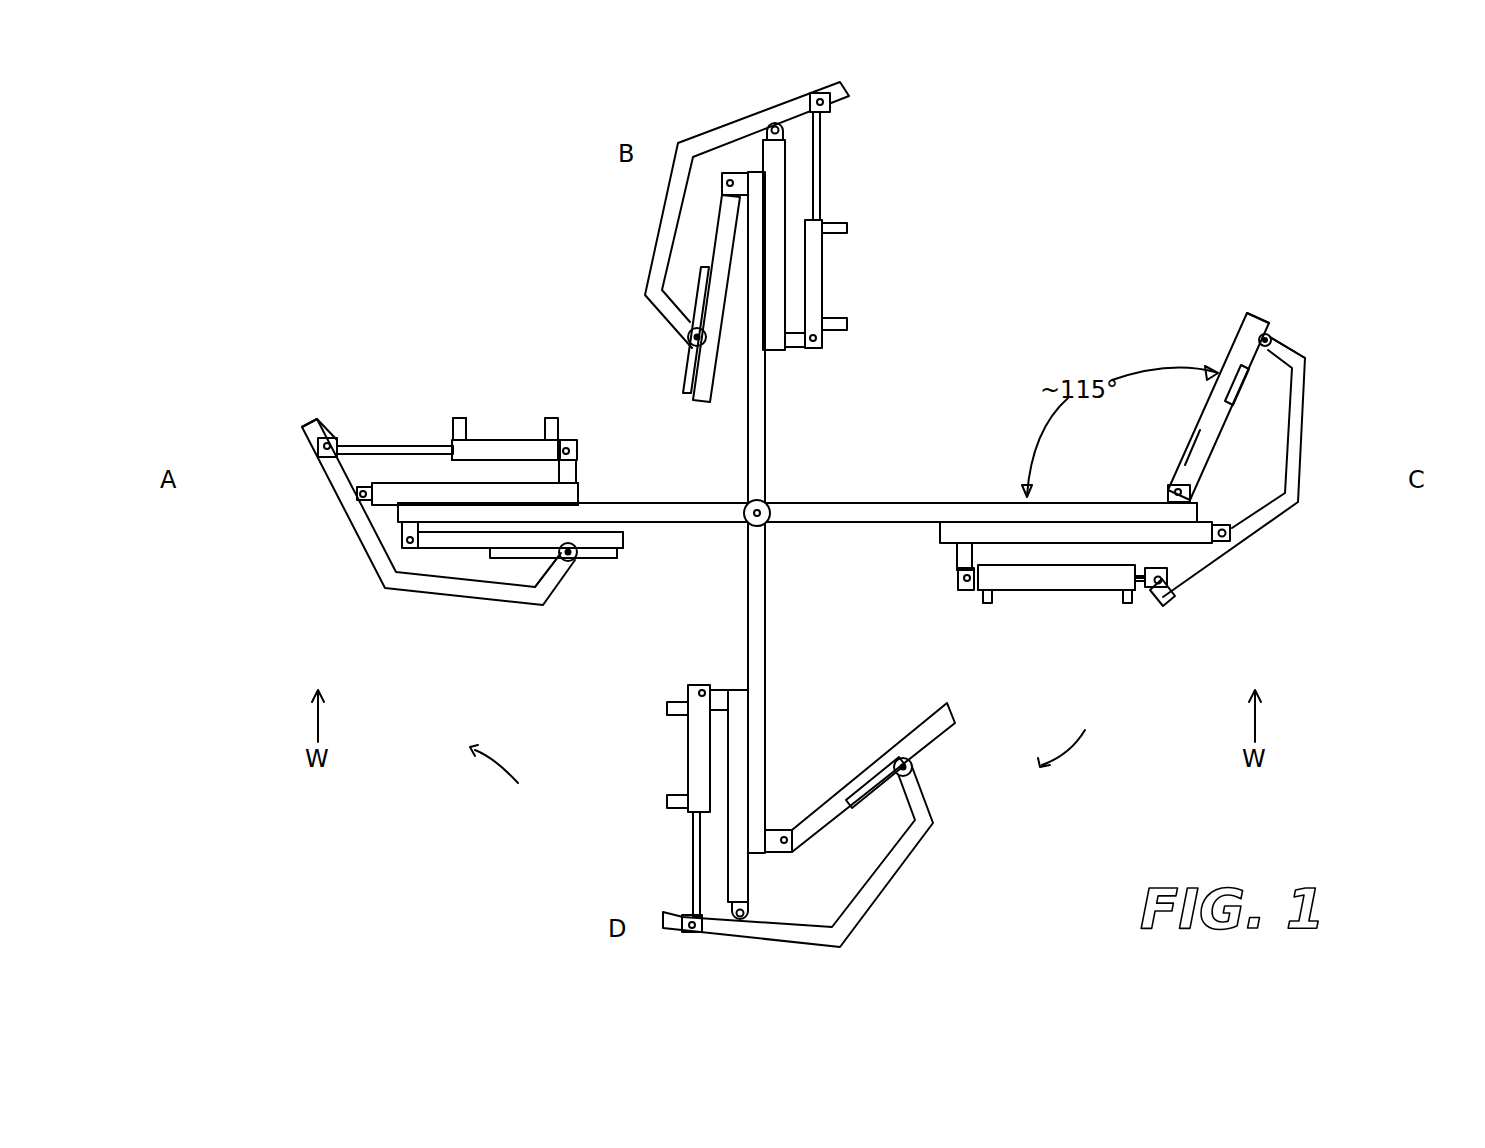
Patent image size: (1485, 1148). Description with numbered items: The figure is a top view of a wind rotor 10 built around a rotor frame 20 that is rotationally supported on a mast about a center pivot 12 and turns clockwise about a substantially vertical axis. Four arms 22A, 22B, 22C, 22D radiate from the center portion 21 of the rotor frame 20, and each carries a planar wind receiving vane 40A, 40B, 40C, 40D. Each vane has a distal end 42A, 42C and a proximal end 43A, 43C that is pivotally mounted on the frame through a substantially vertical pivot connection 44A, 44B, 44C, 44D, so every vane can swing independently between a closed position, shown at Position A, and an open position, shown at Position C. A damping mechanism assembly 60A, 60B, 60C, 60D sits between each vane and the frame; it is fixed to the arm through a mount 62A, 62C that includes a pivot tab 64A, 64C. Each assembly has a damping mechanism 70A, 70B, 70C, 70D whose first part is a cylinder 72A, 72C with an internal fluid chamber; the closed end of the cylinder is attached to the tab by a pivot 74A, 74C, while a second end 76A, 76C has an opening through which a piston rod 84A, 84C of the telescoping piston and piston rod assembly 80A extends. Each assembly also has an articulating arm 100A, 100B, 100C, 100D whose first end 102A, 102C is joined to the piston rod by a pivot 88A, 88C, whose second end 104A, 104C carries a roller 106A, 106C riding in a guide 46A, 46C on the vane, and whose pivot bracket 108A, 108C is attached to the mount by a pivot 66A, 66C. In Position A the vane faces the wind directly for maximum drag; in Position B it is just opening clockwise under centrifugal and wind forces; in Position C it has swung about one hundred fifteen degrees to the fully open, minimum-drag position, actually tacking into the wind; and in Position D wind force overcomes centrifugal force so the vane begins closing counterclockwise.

The wind rotor 10 is at (983, 262).
The center pivot 12 is at (768, 502).
The rotor frame 20 is at (708, 503).
The center portion 21 is at (770, 527).
The arm 22A is at (668, 522).
The arm 22B is at (768, 372).
The arm 22C is at (862, 522).
The arm 22D is at (768, 668).
The wind receiving vane 40A is at (612, 555).
The wind receiving vane 40B is at (715, 390).
The wind receiving vane 40C is at (1237, 362).
The wind receiving vane 40D is at (950, 710).
The distal end 42A is at (590, 533).
The distal end 42C is at (1255, 311).
The proximal end 43A is at (452, 538).
The proximal end 43C is at (1193, 447).
The pivot connection 44A is at (409, 546).
The pivot connection 44B is at (727, 183).
The pivot connection 44C is at (1172, 490).
The pivot connection 44D is at (783, 852).
The guide 46A is at (578, 560).
The guide 46C is at (1240, 372).
The damping mechanism assembly 60A is at (500, 435).
The damping mechanism assembly 60B is at (830, 298).
The damping mechanism assembly 60C is at (1070, 595).
The damping mechanism assembly 60D is at (683, 752).
The mount 62A is at (580, 485).
The mount 62C is at (958, 548).
The pivot tab 64A is at (575, 462).
The pivot tab 64C is at (962, 570).
The pivot 66A is at (363, 486).
The pivot 66C is at (1232, 540).
The damping mechanism 70A is at (480, 440).
The damping mechanism 70B is at (835, 268).
The damping mechanism 70C is at (1052, 590).
The damping mechanism 70D is at (685, 775).
The cylinder 72A is at (515, 447).
The cylinder 72C is at (1003, 578).
The pivot 74A is at (578, 445).
The pivot 74C is at (960, 590).
The second end 76A is at (450, 440).
The second end 76C is at (1140, 582).
The piston and piston rod assembly 80A is at (364, 445).
The piston rod 84A is at (393, 445).
The piston rod 84C is at (1145, 572).
The pivot 88A is at (327, 437).
The pivot 88C is at (1168, 580).
The articulating arm 100A is at (405, 580).
The articulating arm 100B is at (720, 125).
The articulating arm 100C is at (1300, 445).
The articulating arm 100D is at (887, 885).
The first end 102A is at (300, 432).
The first end 102C is at (1170, 600).
The second end 104A is at (547, 587).
The second end 104C is at (1290, 350).
The roller 106A is at (568, 563).
The roller 106C is at (1273, 334).
The pivot bracket 108A is at (362, 498).
The pivot bracket 108C is at (1240, 505).